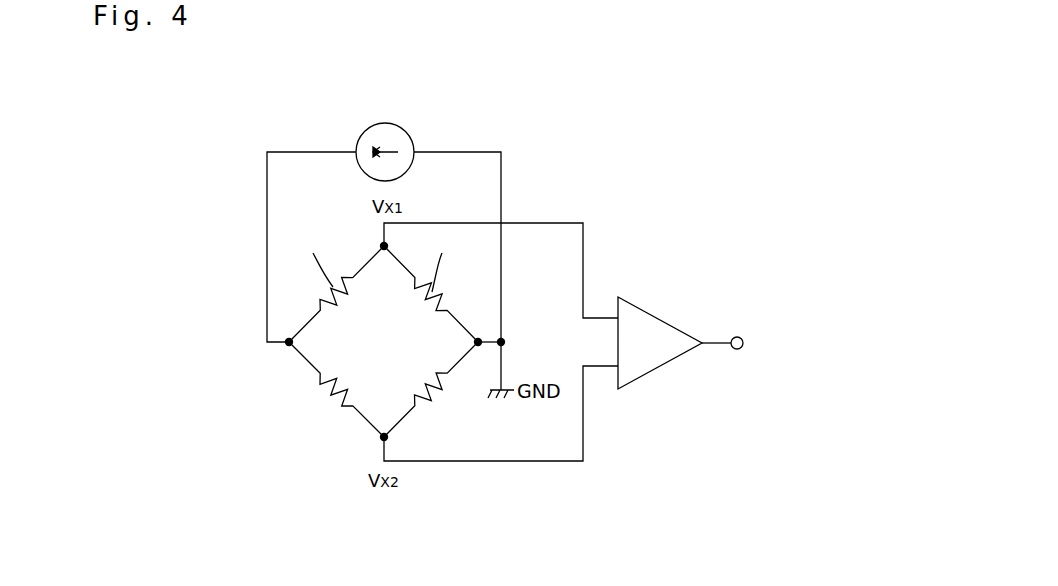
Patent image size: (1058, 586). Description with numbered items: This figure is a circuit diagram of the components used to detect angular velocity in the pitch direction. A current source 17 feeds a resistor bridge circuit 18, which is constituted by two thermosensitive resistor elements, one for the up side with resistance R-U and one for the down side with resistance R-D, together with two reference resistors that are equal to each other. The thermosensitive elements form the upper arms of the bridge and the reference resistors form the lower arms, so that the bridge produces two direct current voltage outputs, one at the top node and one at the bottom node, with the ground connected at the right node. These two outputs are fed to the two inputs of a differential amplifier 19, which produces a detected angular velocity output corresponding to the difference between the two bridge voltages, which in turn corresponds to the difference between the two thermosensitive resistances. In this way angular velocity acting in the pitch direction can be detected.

The current source 17 is at (388, 122).
The resistor bridge circuit 18 is at (278, 382).
The differential amplifier 19 is at (642, 320).